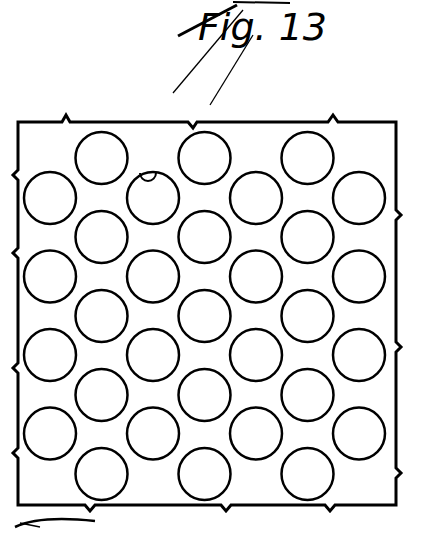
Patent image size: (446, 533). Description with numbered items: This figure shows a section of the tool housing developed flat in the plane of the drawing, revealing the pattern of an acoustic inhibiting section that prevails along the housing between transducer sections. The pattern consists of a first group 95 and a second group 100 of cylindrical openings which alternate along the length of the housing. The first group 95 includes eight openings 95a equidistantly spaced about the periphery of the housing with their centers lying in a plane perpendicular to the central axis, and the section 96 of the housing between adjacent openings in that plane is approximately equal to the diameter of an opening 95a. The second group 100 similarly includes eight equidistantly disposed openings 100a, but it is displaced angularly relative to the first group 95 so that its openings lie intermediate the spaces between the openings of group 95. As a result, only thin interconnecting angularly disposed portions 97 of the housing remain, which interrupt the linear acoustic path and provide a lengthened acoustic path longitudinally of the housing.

The first group of openings 95 is at (96, 133).
The opening 95a is at (156, 173).
The section of the housing 96 is at (102, 197).
The interconnecting angularly disposed portions 97 is at (228, 180).
The second group of openings 100 is at (130, 135).
The opening 100a is at (220, 137).